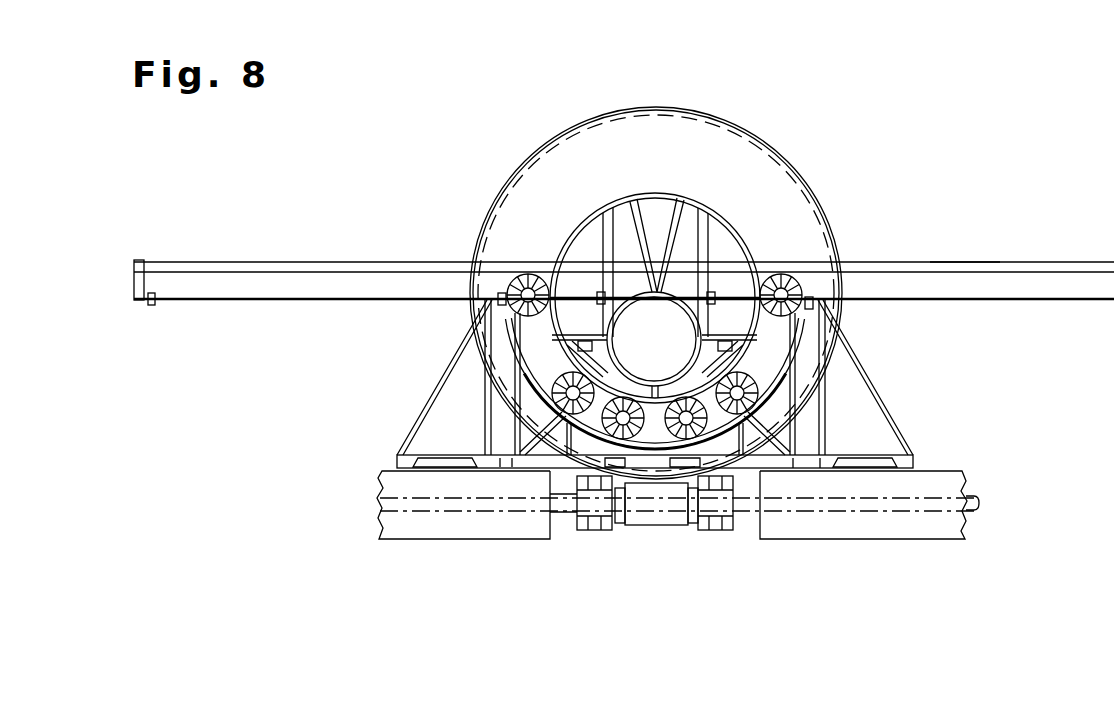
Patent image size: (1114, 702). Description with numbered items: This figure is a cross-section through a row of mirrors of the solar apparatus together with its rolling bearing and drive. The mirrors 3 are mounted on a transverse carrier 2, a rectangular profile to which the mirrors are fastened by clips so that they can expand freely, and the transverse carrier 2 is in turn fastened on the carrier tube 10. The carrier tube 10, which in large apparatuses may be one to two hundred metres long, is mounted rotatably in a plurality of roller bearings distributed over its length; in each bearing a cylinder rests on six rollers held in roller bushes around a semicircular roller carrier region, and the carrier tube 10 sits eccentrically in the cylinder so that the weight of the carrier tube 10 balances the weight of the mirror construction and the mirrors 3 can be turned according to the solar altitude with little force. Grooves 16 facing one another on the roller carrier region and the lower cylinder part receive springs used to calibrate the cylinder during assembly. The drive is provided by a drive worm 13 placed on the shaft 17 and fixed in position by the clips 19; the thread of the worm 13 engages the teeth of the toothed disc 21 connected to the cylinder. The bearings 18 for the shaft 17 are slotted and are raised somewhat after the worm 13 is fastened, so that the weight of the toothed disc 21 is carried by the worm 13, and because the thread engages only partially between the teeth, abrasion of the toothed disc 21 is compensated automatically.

The transverse carrier 2 is at (288, 300).
The mirrors 3 is at (962, 260).
The carrier tube 10 is at (688, 328).
The drive worm 13 is at (657, 525).
The grooves 16 is at (518, 367).
The shaft 17 is at (562, 510).
The bearings 18 is at (596, 530).
The clips 19 is at (621, 523).
The toothed disc 21 is at (504, 197).